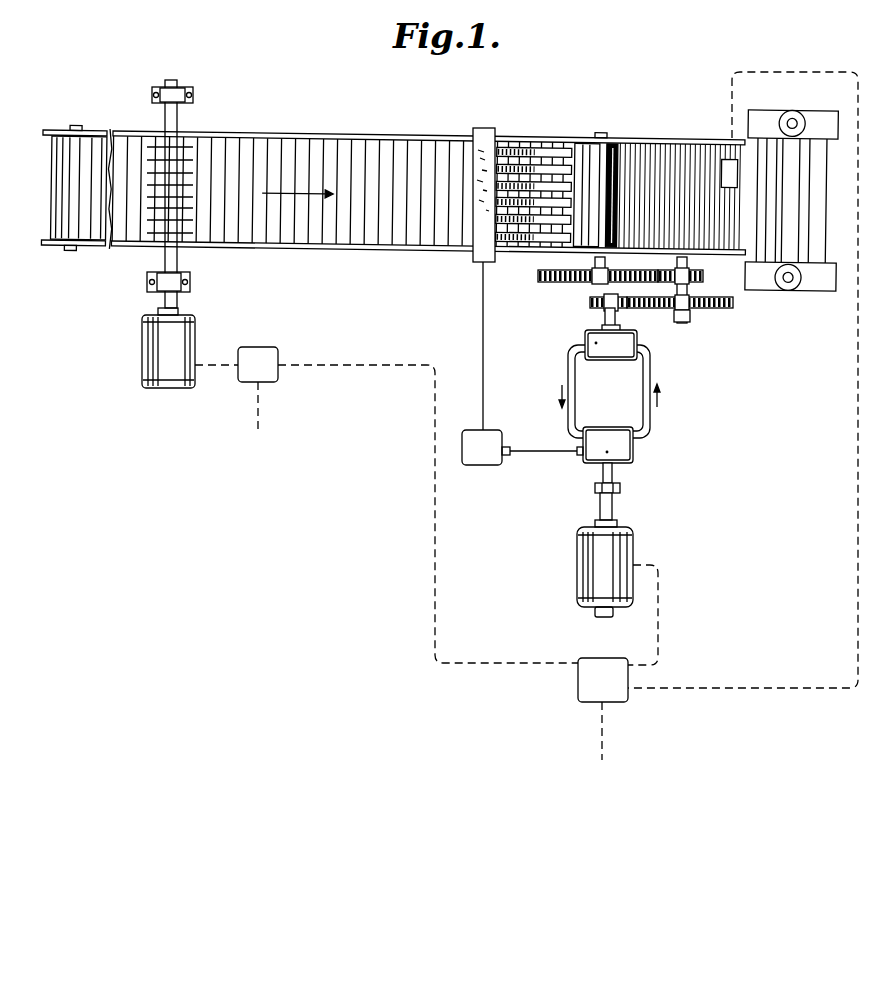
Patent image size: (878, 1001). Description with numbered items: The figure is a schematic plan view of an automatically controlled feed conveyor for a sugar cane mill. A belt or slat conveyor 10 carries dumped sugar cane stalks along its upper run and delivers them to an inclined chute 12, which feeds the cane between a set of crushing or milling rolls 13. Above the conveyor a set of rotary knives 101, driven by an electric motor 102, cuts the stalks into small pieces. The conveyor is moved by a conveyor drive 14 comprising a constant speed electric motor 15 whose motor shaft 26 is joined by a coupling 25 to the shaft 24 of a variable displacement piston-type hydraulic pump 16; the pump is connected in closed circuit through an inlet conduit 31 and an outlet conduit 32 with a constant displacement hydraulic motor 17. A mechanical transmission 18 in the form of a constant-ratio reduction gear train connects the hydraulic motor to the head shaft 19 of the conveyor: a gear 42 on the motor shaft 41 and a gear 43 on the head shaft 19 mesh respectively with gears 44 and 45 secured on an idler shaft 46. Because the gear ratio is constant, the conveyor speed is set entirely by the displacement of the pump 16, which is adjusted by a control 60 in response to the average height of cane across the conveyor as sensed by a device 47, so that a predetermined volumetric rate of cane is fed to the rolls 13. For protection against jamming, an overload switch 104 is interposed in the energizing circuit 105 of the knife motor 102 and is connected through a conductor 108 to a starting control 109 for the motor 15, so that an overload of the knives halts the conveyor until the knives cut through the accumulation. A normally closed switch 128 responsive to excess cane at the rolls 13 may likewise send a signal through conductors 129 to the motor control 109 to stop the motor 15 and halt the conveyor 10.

The belt or slat conveyor 10 is at (324, 147).
The inclined chute 12 is at (651, 150).
The crushing or milling rolls 13 is at (808, 140).
The conveyor drive 14 is at (610, 495).
The constant speed electric motor 15 is at (635, 545).
The variable displacement hydraulic pump 16 is at (605, 439).
The constant displacement hydraulic motor 17 is at (611, 354).
The mechanical transmission 18 is at (573, 293).
The head shaft 19 is at (593, 263).
The shaft 24 is at (603, 475).
The coupling 25 is at (595, 490).
The motor shaft 26 is at (598, 511).
The inlet conduit 31 is at (567, 366).
The outlet conduit 32 is at (651, 366).
The shaft 41 is at (617, 318).
The gear 42 is at (591, 308).
The gear 43 is at (545, 275).
The gear 44 is at (709, 312).
The gear 45 is at (700, 277).
The idler shaft 46 is at (700, 299).
The sensing device 47 is at (499, 127).
The control 60 is at (482, 462).
The rotary knives 101 is at (190, 148).
The electric motor 102 is at (197, 326).
The overload switch 104 is at (259, 352).
The energizing circuit 105 is at (250, 407).
The conductor 108 is at (433, 540).
The starting control 109 is at (590, 684).
The normally closed switch 128 is at (726, 165).
The conductors 129 is at (848, 464).